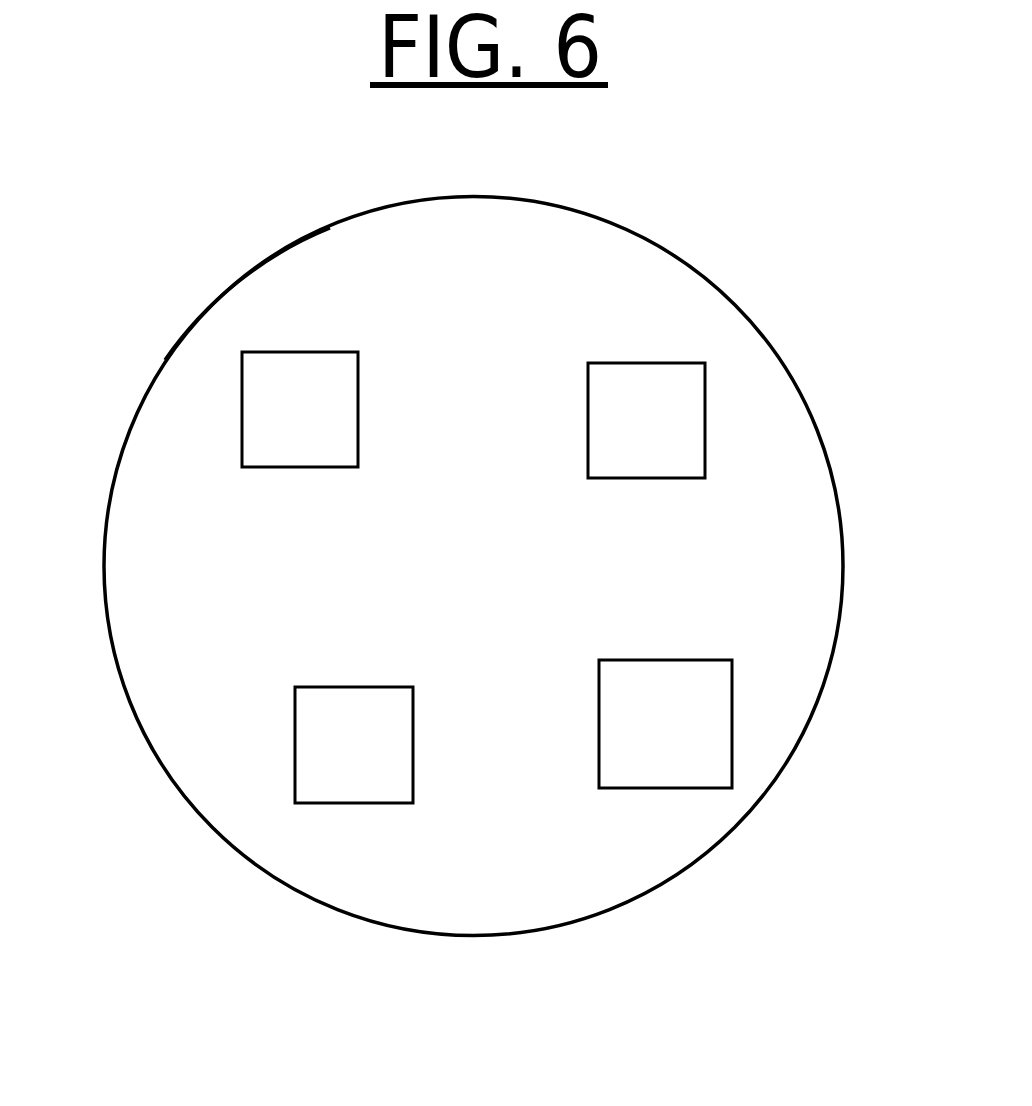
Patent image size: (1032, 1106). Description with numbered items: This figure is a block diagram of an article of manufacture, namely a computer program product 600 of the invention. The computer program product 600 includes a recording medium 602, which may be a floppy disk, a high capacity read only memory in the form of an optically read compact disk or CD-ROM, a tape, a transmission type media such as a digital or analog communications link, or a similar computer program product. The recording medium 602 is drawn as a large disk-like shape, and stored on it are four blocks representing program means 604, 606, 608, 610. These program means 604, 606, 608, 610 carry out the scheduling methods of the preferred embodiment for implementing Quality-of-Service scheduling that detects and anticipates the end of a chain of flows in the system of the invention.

The computer program product 600 is at (790, 320).
The recording medium 602 is at (166, 353).
The program means 604 is at (354, 745).
The program means 606 is at (665, 724).
The program means 608 is at (646, 420).
The program means 610 is at (300, 409).